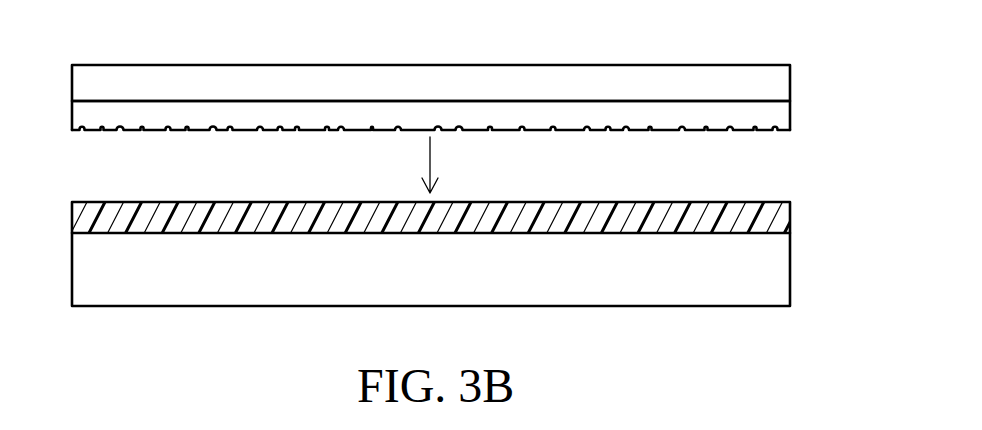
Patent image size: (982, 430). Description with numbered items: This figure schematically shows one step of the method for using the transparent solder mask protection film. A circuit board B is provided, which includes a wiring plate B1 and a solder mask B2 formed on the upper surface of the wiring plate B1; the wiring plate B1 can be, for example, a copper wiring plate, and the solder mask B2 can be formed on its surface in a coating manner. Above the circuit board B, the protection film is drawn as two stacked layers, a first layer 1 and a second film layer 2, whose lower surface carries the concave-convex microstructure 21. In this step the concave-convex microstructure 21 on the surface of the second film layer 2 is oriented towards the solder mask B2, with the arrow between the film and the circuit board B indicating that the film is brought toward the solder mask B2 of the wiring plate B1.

The substrate layer 1 is at (86, 85).
The second film layer 2 is at (86, 117).
The concave-convex microstructure 21 is at (762, 131).
The circuit board B is at (475, 252).
The wiring plate B1 is at (465, 269).
The solder mask B2 is at (772, 217).